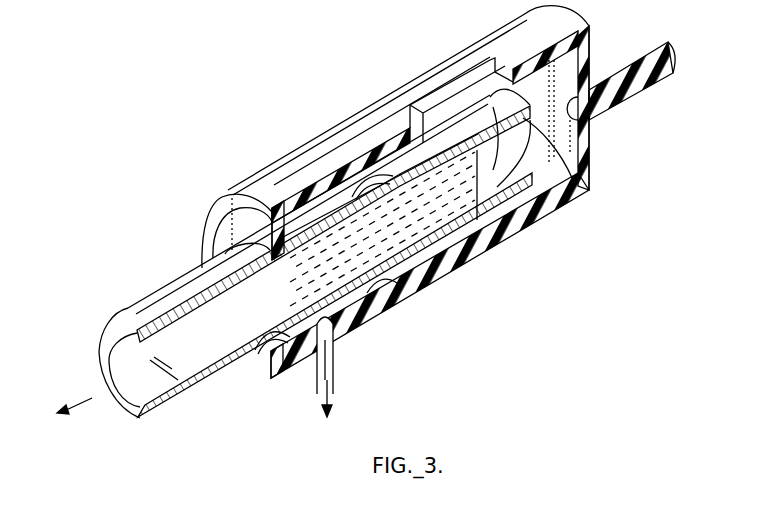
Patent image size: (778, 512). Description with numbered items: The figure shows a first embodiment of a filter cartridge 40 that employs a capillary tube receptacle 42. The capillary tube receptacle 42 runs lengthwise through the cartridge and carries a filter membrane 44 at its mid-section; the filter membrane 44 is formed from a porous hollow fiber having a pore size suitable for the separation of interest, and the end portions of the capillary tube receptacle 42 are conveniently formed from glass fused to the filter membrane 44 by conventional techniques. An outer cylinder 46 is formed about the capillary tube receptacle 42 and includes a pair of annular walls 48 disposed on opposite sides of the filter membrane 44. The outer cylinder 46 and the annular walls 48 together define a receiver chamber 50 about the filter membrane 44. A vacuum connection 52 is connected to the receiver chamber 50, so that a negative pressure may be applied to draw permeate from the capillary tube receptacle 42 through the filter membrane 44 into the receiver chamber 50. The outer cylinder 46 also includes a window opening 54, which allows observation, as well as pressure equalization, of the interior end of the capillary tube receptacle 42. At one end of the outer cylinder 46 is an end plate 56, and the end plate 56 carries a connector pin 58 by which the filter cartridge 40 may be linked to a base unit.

The filter cartridge 40 is at (397, 41).
The capillary tube receptacle 42 is at (224, 388).
The filter membrane 44 is at (374, 298).
The outer cylinder 46 is at (550, 200).
The annular walls 48 is at (375, 163).
The receiver chamber 50 is at (336, 327).
The vacuum connection 52 is at (336, 386).
The window opening 54 is at (480, 83).
The end plate 56 is at (590, 59).
The connector pin 58 is at (658, 43).